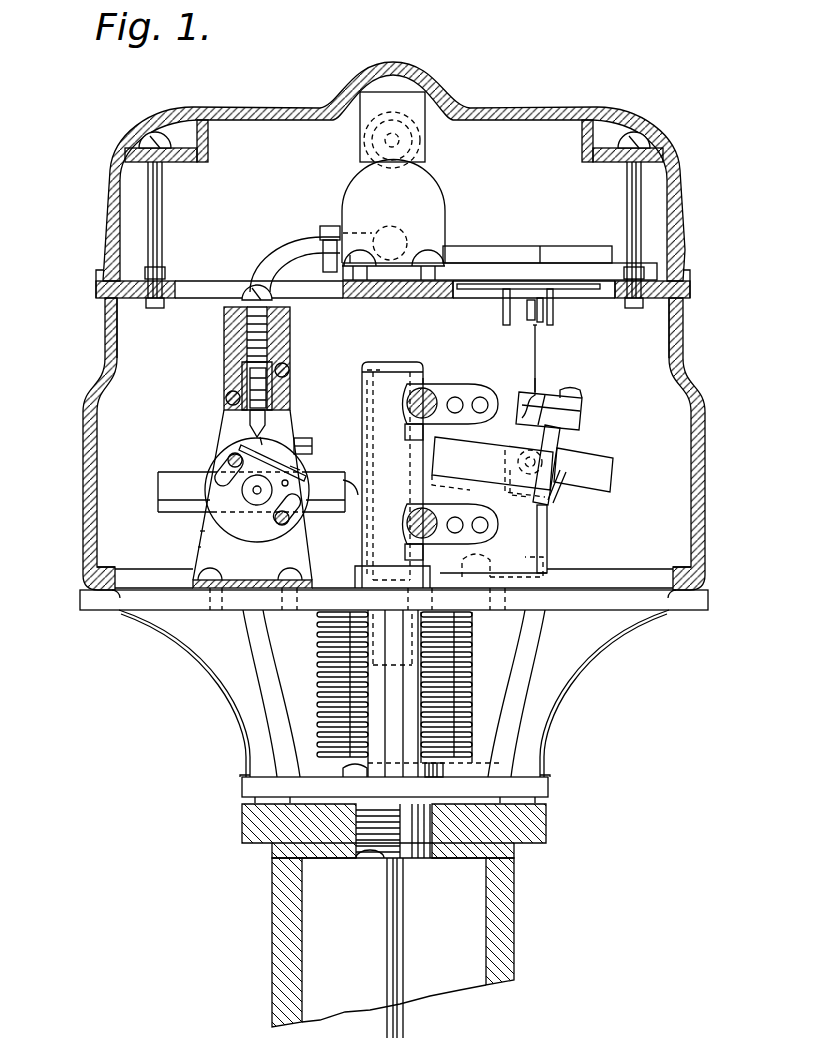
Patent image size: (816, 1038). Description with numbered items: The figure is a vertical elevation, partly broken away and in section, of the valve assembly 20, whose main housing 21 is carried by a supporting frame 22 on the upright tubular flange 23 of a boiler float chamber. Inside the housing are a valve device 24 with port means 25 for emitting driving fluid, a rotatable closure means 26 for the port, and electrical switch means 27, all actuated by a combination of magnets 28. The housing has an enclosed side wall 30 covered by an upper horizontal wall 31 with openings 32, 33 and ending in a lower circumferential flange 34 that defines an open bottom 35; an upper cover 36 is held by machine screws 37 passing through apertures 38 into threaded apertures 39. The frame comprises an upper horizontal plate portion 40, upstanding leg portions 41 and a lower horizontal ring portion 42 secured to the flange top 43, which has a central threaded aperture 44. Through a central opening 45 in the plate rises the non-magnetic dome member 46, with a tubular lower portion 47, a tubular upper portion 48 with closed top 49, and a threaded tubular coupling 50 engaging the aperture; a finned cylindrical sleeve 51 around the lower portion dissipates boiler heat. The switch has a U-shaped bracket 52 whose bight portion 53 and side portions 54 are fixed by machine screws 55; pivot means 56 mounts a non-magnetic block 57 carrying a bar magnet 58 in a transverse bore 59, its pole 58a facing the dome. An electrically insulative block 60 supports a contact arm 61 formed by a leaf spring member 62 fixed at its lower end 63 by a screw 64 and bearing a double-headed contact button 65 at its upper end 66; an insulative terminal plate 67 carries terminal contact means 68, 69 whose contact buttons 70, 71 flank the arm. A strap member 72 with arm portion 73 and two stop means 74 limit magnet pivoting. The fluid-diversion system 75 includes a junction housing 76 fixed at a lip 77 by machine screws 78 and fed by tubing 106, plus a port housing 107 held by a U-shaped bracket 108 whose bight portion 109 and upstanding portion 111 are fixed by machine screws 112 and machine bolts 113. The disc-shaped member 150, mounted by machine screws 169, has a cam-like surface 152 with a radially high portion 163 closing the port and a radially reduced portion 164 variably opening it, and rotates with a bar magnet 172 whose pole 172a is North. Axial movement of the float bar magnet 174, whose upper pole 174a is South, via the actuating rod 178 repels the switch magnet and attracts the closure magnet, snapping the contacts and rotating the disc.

The valve assembly 20 is at (213, 879).
The main housing 21 is at (78, 526).
The supporting frame 22 is at (226, 701).
The tubular flange 23 is at (268, 979).
The valve device 24 is at (158, 439).
The port means 25 is at (248, 421).
The closure means 26 is at (311, 457).
The electrical switch means 27 is at (482, 383).
The combination of magnets 28 is at (358, 541).
The side wall 30 is at (706, 441).
The upper horizontal wall 31 is at (120, 306).
The opening 32 is at (180, 281).
The opening 33 is at (452, 293).
The lower circumferential flange 34 is at (105, 572).
The open bottom 35 is at (118, 608).
The upper cover 36 is at (455, 88).
The machine screws 37 is at (150, 193).
The apertures 38 is at (140, 150).
The threaded apertures 39 is at (152, 272).
The upper horizontal plate portion 40 is at (160, 603).
The leg portions 41 is at (215, 651).
The lower horizontal ring portion 42 is at (242, 791).
The top 43 is at (305, 853).
The threaded aperture 44 is at (367, 846).
The opening 45 is at (317, 623).
The dome member 46 is at (366, 599).
The tubular lower portion 47 is at (476, 617).
The tubular upper portion 48 is at (372, 369).
The closed top 49 is at (400, 362).
The threaded tubular coupling 50 is at (443, 771).
The finned cylindrical sleeve 51 is at (470, 666).
The U-shaped bracket 52 is at (552, 554).
The bight portion 53 is at (473, 560).
The side portions 54 is at (548, 541).
The machine screws 55 is at (520, 571).
The pivot means 56 is at (575, 451).
The non-magnetic block 57 is at (530, 406).
The bar magnet 58 is at (612, 476).
The pole 58a is at (488, 476).
The transverse bore 59 is at (510, 471).
The electrically insulative block 60 is at (580, 411).
The contact arm 61 is at (550, 353).
The leaf spring member 62 is at (540, 379).
The lower end 63 is at (556, 393).
The screw 64 is at (582, 397).
The double-headed contact button 65 is at (527, 316).
The upper end 66 is at (543, 329).
The insulative terminal plate 67 is at (405, 289).
The terminal contact means 68 is at (490, 297).
The terminal contact means 69 is at (565, 304).
The contact button 70 is at (520, 284).
The contact button 71 is at (545, 284).
The strap member 72 is at (565, 483).
The arm portion 73 is at (510, 491).
The stop means 74 is at (418, 426).
The fluid-diversion system 75 is at (318, 193).
The junction housing 76 is at (435, 177).
The lip or flange 77 is at (332, 269).
The machine screws 78 is at (360, 254).
The tubing 106 is at (300, 246).
The port housing 107 is at (224, 326).
The U-shaped bracket 108 is at (200, 531).
The bight portion 109 is at (255, 582).
The upstanding portion 111 is at (198, 547).
The machine screws 112 is at (200, 579).
The machine bolts 113 is at (232, 395).
The disc-shaped member 150 is at (246, 546).
The cam-like surface 152 is at (282, 441).
The radially high portion 163 is at (240, 449).
The radially reduced portion 164 is at (298, 447).
The machine screws 169 is at (220, 463).
The bar magnet 172 is at (158, 486).
The pole 172a is at (362, 531).
The bar magnet 174 is at (362, 562).
The upper pole 174a is at (365, 446).
The actuating rod 178 is at (402, 969).